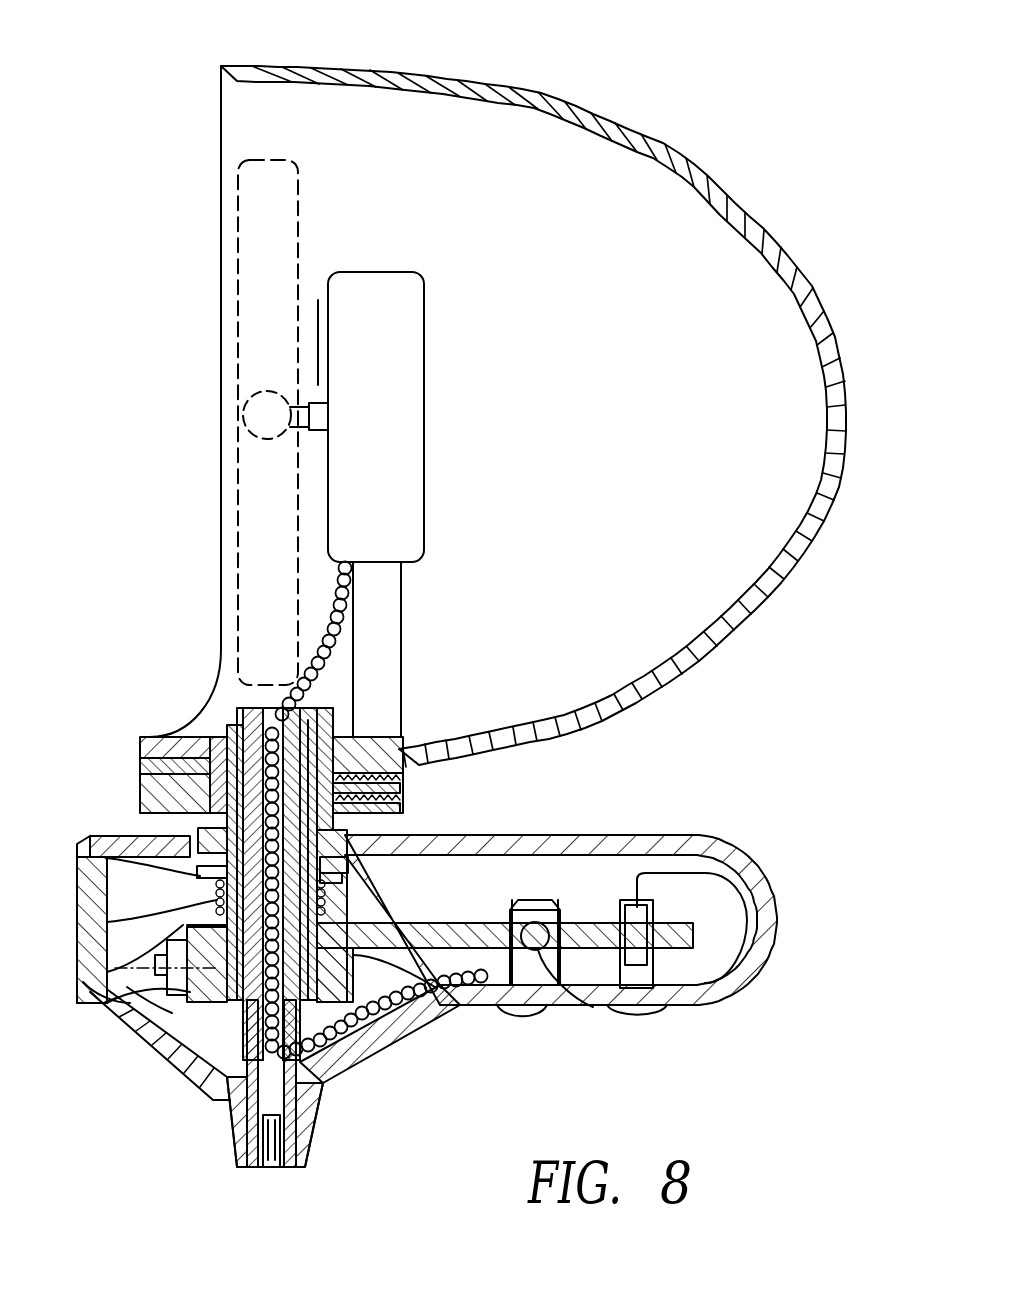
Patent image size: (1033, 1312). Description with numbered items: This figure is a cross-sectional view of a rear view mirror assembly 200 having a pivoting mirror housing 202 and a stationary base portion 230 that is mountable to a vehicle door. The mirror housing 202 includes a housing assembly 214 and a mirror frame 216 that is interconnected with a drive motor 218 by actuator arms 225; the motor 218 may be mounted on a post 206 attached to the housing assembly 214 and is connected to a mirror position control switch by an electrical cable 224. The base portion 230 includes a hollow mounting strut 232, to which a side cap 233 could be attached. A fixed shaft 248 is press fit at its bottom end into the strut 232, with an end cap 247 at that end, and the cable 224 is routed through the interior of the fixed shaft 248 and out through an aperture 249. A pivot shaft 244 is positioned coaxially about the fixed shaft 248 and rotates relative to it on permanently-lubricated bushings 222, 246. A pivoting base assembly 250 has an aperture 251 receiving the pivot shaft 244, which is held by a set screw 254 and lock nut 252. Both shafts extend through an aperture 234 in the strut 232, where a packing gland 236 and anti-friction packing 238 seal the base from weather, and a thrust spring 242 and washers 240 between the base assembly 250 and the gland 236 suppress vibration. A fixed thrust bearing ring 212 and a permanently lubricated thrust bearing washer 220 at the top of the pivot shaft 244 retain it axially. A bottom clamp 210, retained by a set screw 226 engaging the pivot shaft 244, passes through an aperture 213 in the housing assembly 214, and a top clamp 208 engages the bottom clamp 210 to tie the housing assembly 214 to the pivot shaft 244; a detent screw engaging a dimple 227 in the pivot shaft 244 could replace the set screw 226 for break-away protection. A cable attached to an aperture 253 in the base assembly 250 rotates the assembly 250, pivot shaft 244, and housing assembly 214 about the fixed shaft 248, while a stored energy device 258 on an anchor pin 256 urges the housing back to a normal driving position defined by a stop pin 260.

The rear view mirror assembly 200 is at (690, 95).
The pivoting mirror housing 202 is at (178, 142).
The post 206 is at (380, 614).
The top clamp 208 is at (140, 745).
The bottom clamp 210 is at (140, 800).
The fixed thrust bearing ring 212 is at (257, 690).
The aperture 213 is at (185, 733).
The housing assembly 214 is at (818, 292).
The mirror frame 216 is at (263, 248).
The drive motor 218 is at (430, 458).
The permanently lubricated thrust bearing washer 220 is at (357, 690).
The permanently-lubricated bushing 222 is at (88, 836).
The electrical cable 224 is at (360, 582).
The actuator arms 225 is at (318, 385).
The set screw 226 is at (410, 795).
The dimple 227 is at (333, 712).
The stationary base portion 230 is at (760, 1030).
The hollow mounting strut 232 is at (380, 1030).
The side cap 233 is at (140, 895).
The aperture 234 is at (360, 858).
The packing gland 236 is at (107, 868).
The anti-friction packing 238 is at (342, 888).
The washers 240 is at (200, 905).
The thrust spring 242 is at (187, 950).
The pivot shaft 244 is at (140, 1035).
The permanently-lubricated bushing 246 is at (243, 1035).
The end cap 247 is at (270, 1170).
The fixed shaft 248 is at (225, 1100).
The aperture 249 is at (325, 1100).
The pivoting base assembly 250 is at (482, 920).
The aperture 251 is at (345, 1040).
The lock nut 252 is at (110, 1003).
The aperture 253 is at (598, 912).
The set screw 254 is at (155, 965).
The anchor pin 256 is at (540, 905).
The stored energy device 258 is at (638, 996).
The stop pin 260 is at (725, 858).